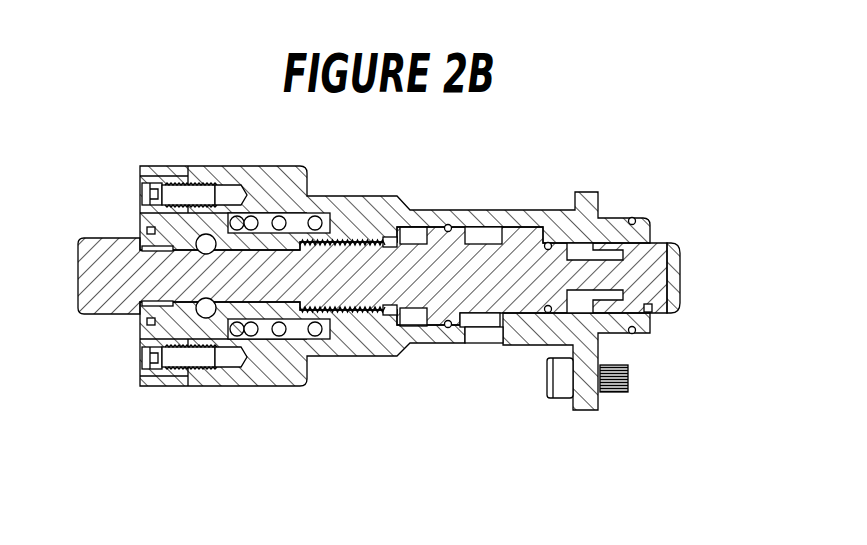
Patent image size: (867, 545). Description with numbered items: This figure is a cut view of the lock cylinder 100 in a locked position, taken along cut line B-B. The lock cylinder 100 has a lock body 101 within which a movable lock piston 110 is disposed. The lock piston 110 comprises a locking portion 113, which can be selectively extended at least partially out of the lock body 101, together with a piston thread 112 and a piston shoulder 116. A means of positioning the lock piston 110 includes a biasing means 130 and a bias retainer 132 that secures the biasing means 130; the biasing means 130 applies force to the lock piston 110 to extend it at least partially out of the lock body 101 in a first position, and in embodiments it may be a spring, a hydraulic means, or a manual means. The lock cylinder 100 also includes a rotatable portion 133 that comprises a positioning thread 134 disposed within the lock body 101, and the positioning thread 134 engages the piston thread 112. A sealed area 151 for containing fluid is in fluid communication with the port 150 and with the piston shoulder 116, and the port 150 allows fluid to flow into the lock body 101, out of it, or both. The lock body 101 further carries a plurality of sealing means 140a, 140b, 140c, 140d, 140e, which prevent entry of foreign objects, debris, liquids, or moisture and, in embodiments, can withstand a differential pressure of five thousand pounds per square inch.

The lock cylinder 100 is at (297, 455).
The lock body 101 is at (328, 195).
The lock piston 110 is at (410, 283).
The piston thread 112 is at (372, 250).
The locking portion 113 is at (672, 243).
The piston shoulder 116 is at (480, 330).
The biasing means 130 is at (264, 337).
The bias retainer 132 is at (217, 320).
The rotatable portion 133 is at (317, 327).
The positioning thread 134 is at (373, 312).
The sealing means 140a is at (647, 313).
The sealing means 140b is at (632, 217).
The sealing means 140c is at (548, 242).
The sealing means 140d is at (447, 224).
The sealing means 140e is at (151, 326).
The port 150 is at (490, 344).
The sealed area 151 is at (481, 229).